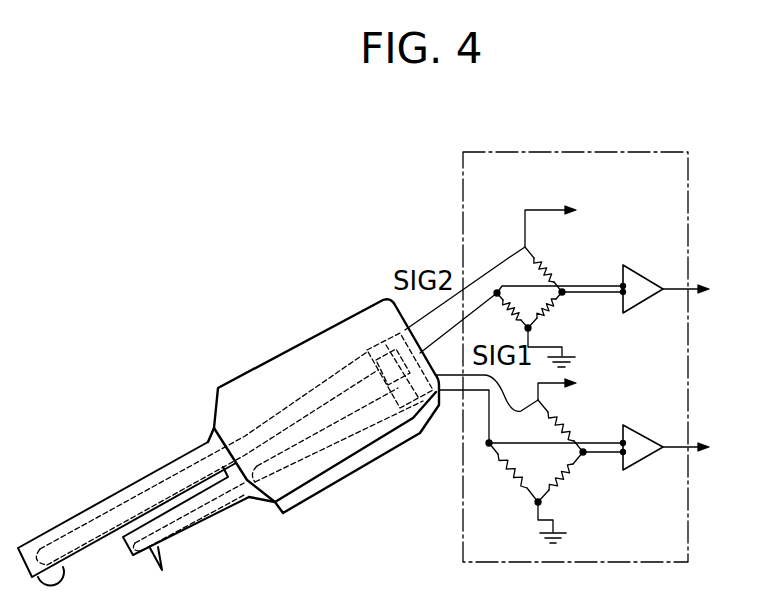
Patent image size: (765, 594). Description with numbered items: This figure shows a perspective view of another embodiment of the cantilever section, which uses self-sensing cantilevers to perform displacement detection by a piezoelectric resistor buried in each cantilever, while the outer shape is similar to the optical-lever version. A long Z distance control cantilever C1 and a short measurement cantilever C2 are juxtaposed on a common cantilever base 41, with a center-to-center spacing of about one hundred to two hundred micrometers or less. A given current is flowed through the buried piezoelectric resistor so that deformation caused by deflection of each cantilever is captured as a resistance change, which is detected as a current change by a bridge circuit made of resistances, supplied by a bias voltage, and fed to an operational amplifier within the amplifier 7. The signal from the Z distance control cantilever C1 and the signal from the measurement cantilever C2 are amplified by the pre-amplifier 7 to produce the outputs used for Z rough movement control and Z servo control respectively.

The cantilever base 41 is at (264, 363).
The amplifier 7 is at (463, 174).
The Z distance control cantilever C1 is at (165, 467).
The measurement cantilever C2 is at (189, 530).